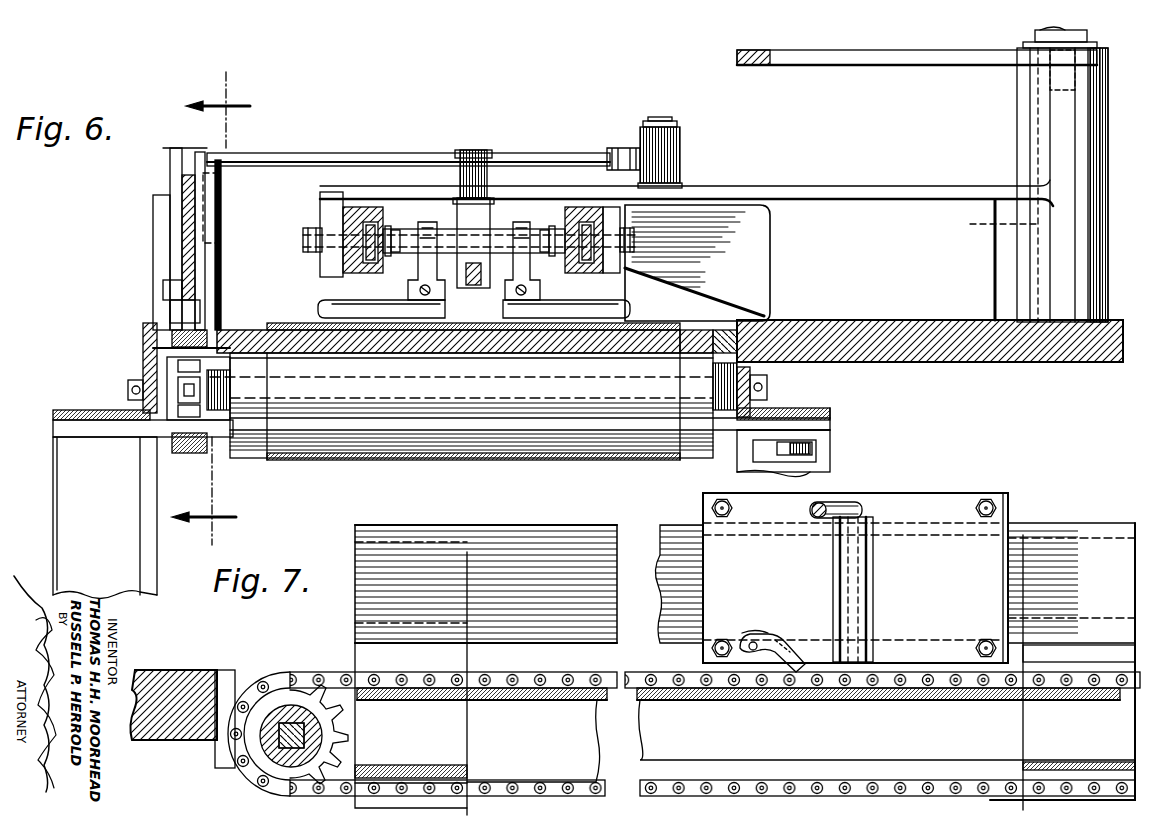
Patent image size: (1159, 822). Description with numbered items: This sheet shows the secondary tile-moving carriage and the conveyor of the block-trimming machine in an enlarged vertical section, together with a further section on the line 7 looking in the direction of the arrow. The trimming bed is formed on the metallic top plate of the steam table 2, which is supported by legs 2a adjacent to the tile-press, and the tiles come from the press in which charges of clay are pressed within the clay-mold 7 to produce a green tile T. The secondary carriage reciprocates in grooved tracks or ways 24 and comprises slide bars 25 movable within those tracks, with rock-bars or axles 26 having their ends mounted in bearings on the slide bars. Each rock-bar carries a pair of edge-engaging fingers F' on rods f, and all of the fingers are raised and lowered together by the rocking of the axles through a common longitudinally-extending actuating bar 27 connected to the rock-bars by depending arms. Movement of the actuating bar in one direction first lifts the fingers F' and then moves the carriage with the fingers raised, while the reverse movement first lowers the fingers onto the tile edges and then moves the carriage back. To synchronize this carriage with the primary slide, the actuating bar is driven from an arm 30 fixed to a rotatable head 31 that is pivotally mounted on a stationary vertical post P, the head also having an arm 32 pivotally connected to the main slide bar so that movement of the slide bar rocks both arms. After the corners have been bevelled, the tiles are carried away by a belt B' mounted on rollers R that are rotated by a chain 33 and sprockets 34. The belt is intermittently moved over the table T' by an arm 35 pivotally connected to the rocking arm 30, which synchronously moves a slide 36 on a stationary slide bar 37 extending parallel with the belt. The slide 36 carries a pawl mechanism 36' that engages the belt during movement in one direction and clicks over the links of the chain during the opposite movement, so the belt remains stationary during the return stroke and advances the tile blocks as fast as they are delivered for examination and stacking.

In FIG. 7, the steam table 2 is at (204, 650).
In FIG. 6, the legs 2a is at (852, 443).
In FIG. 6, the clay-mold 7 is at (211, 313).
In FIG. 6, the tracks or ways 24 is at (345, 275).
In FIG. 6, the slide bars 25 is at (407, 190).
In FIG. 6, the rock-bars or axles 26 is at (497, 237).
In FIG. 6, the actuating bar 27 is at (470, 262).
In FIG. 6, the arm 30 is at (918, 56).
In FIG. 6, the rotatable head 31 is at (1053, 127).
In FIG. 6, the arm 32 is at (963, 168).
In FIG. 6, the chain 33 is at (157, 326).
In FIG. 7, the chain 33 is at (603, 676).
In FIG. 7, the sprockets 34 is at (253, 741).
In FIG. 6, the arm 35 is at (393, 133).
In FIG. 7, the arm 35 is at (840, 503).
In FIG. 6, the slide 36 is at (166, 239).
In FIG. 7, the slide 36 is at (855, 563).
In FIG. 6, the pawl mechanism 36' is at (156, 305).
In FIG. 7, the pawl mechanism 36' is at (773, 635).
In FIG. 6, the stationary slide bar 37 is at (193, 224).
In FIG. 7, the stationary slide bar 37 is at (605, 552).
In FIG. 6, the rods f is at (428, 228).
In FIG. 6, the edge-engaging fingers F' is at (474, 325).
In FIG. 6, the green tile T is at (473, 315).
In FIG. 6, the table T' is at (477, 327).
In FIG. 7, the table T' is at (745, 665).
In FIG. 6, the belt B' is at (695, 265).
In FIG. 6, the stationary vertical post P is at (992, 225).
In FIG. 6, the rollers R is at (627, 387).